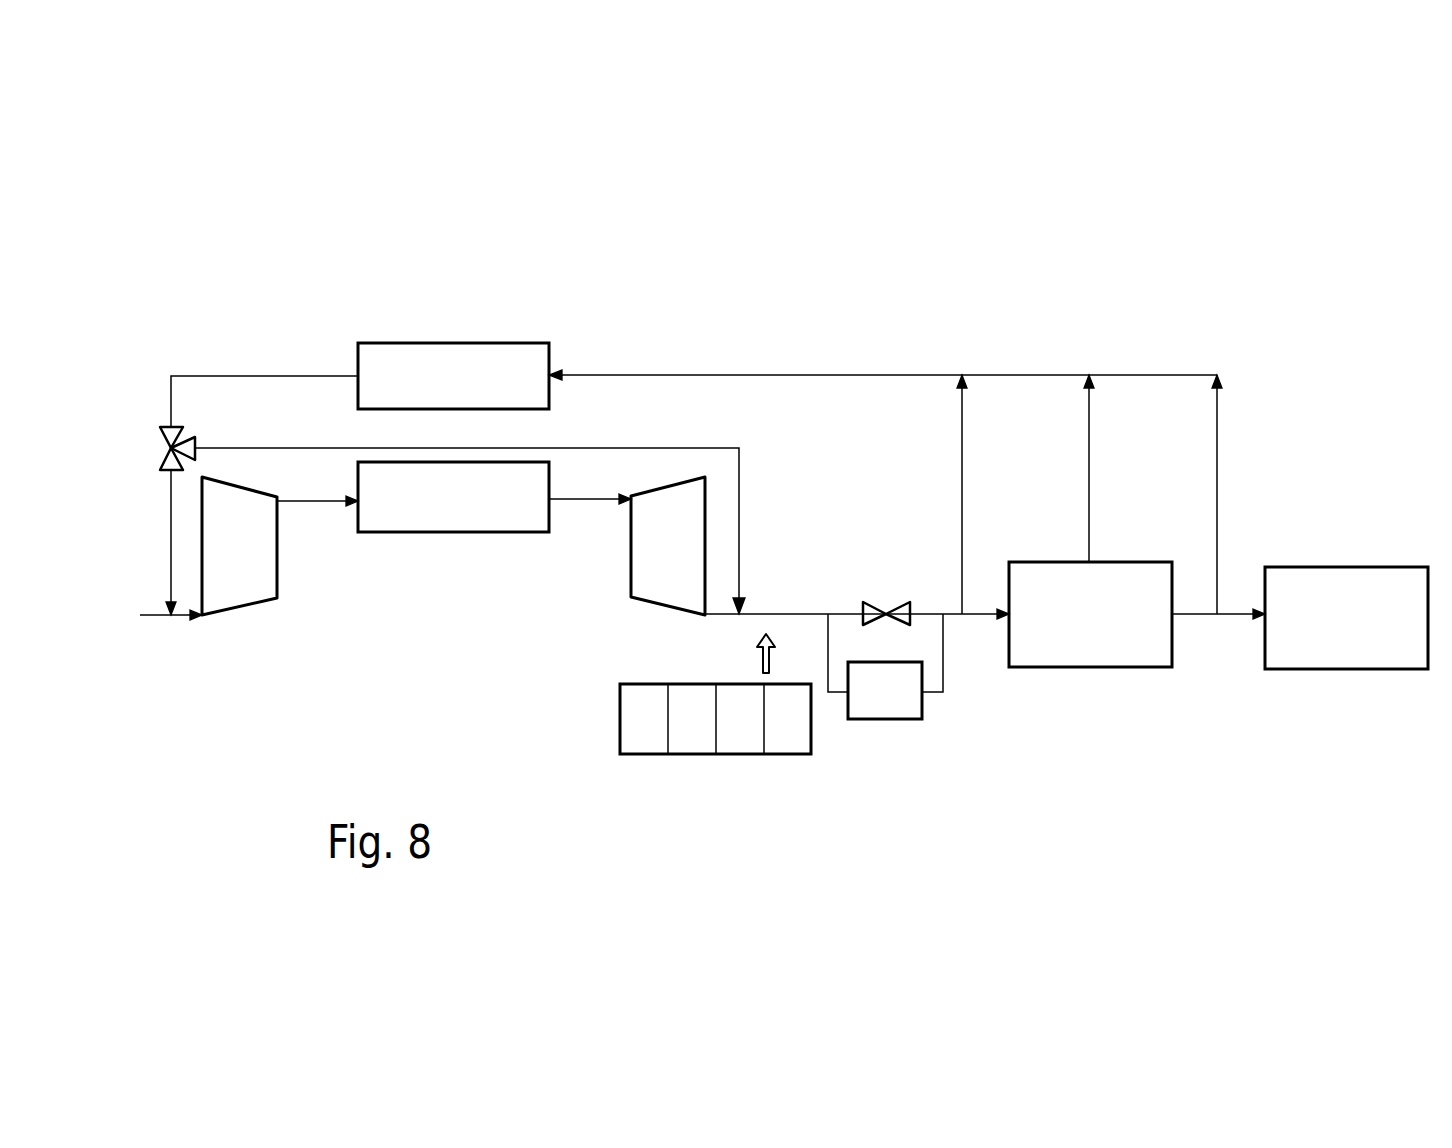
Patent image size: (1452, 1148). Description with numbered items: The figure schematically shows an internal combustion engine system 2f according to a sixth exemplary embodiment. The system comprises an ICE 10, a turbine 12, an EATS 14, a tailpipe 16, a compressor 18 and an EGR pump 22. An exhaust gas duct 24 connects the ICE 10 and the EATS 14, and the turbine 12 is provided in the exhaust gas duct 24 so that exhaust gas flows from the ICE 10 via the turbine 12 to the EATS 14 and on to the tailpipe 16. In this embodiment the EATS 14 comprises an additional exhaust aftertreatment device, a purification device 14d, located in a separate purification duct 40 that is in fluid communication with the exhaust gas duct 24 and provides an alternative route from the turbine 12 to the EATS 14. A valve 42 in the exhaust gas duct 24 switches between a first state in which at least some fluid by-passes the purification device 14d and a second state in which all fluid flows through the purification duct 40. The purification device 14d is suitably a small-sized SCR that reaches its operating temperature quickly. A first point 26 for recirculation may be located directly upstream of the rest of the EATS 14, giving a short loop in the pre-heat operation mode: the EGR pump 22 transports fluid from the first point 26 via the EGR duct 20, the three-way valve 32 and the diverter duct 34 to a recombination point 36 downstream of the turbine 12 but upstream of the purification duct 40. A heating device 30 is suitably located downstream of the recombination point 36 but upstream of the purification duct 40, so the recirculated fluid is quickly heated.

The internal combustion engine system 2f is at (262, 203).
The ICE 10 is at (494, 572).
The turbine 12 is at (628, 590).
The EATS 14 is at (1044, 686).
The purification device 14d is at (899, 748).
The tailpipe 16 is at (1346, 688).
The compressor 18 is at (280, 611).
The EGR duct 20 is at (883, 305).
The EGR pump 22 is at (453, 316).
The exhaust gas duct 24 is at (985, 568).
The first point 26 is at (1089, 585).
The heating device 30 is at (715, 745).
The three-way valve 32 is at (170, 426).
The diverter duct 34 is at (467, 406).
The recombination point 36 is at (772, 542).
The purification duct 40 is at (865, 734).
The valve 42 is at (895, 552).